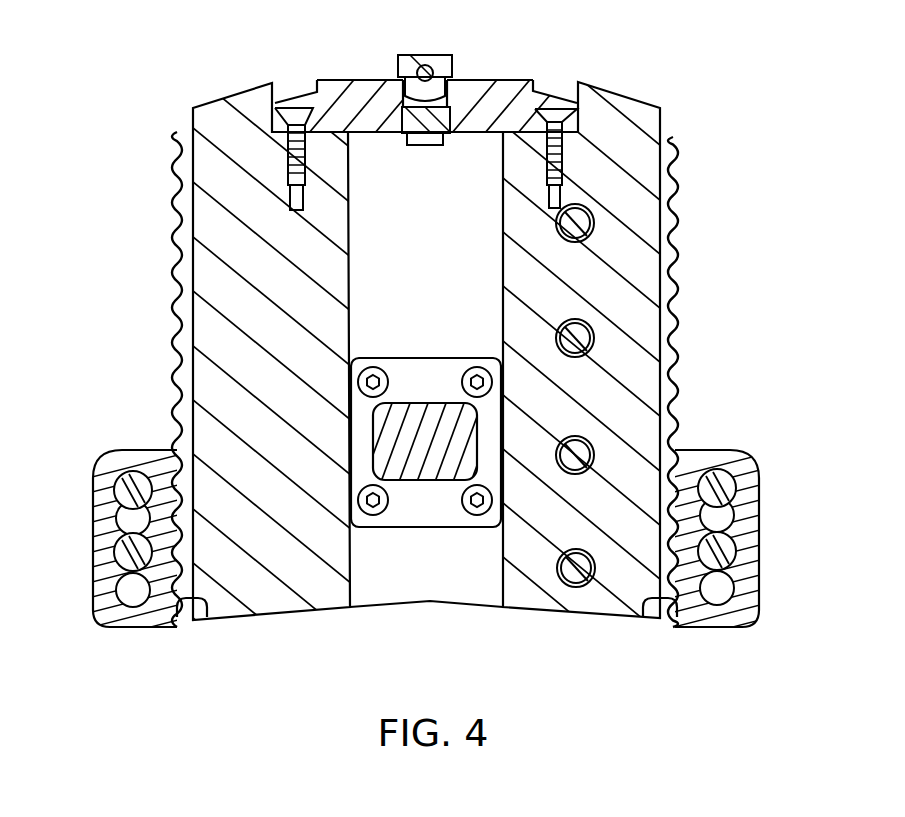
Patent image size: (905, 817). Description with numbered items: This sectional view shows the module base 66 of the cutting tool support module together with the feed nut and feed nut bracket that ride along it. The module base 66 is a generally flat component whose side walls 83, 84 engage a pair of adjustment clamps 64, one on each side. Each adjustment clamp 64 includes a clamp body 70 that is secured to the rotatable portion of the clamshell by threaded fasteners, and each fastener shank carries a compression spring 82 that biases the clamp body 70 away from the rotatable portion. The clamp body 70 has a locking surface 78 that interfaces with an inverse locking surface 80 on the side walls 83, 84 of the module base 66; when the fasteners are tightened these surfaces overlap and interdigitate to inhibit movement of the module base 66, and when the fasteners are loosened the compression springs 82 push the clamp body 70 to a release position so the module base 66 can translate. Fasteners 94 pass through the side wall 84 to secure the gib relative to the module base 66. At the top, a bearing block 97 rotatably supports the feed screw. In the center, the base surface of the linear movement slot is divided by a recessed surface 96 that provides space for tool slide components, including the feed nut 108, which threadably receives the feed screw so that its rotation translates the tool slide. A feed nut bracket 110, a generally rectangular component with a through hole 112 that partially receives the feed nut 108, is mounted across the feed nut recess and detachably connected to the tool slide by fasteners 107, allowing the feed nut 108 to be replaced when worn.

The adjustment clamp 64 is at (418, 499).
The module base 66 is at (425, 385).
The clamp body 70 is at (128, 448).
The locking surface 78 is at (199, 617).
The inverse locking surface 80 is at (176, 384).
The compression spring 82 is at (116, 522).
The side wall 83 is at (193, 178).
The side wall 84 is at (660, 174).
The fastener 94 is at (593, 336).
The recessed surface 96 is at (426, 422).
The bearing block 97 is at (497, 80).
The fastener 107 is at (373, 368).
The feed nut 108 is at (431, 433).
The feed nut bracket 110 is at (462, 358).
The through hole 112 is at (430, 468).